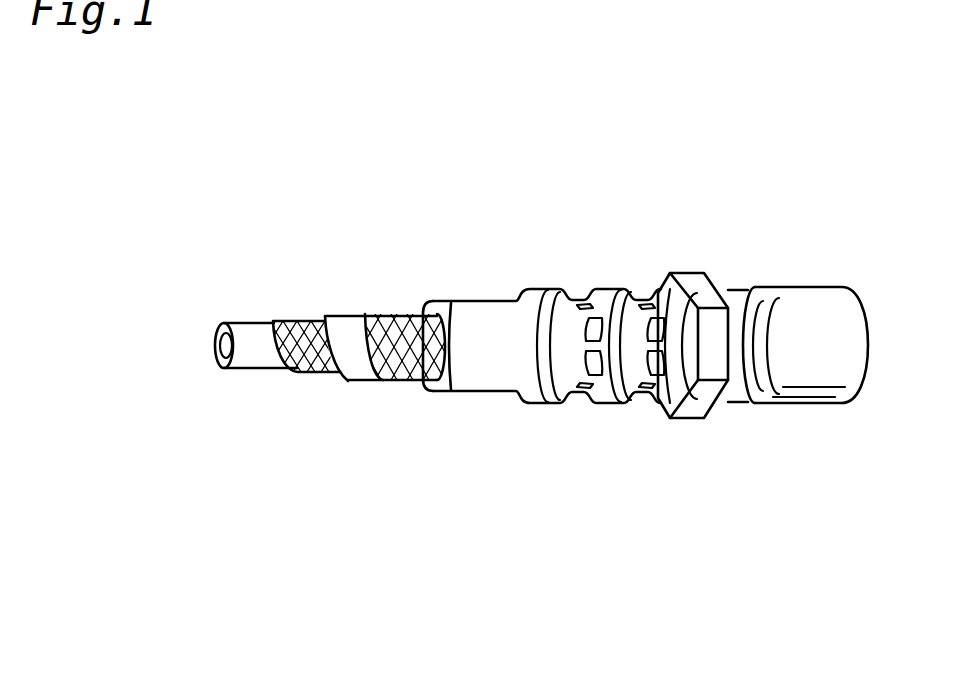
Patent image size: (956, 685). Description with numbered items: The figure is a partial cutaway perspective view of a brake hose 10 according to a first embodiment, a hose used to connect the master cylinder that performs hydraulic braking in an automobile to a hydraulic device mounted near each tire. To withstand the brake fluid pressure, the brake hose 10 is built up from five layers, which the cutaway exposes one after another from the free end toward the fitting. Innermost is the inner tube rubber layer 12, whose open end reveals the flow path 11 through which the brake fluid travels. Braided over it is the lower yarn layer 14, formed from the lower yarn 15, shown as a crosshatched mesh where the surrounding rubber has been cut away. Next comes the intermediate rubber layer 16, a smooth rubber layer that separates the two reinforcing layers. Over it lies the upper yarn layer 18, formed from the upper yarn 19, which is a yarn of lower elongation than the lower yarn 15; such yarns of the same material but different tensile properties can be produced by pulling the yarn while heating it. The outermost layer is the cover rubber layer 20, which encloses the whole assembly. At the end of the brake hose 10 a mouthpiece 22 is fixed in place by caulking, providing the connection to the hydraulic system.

The brake hose 10 is at (615, 190).
The flow path 11 is at (215, 353).
The inner tube rubber layer 12 is at (250, 336).
The lower yarn layer 14 is at (306, 322).
The lower yarn 15 is at (312, 369).
The intermediate rubber layer 16 is at (348, 320).
The upper yarn layer 18 is at (403, 312).
The upper yarn 19 is at (397, 385).
The cover rubber layer 20 is at (480, 310).
The mouthpiece 22 is at (813, 287).